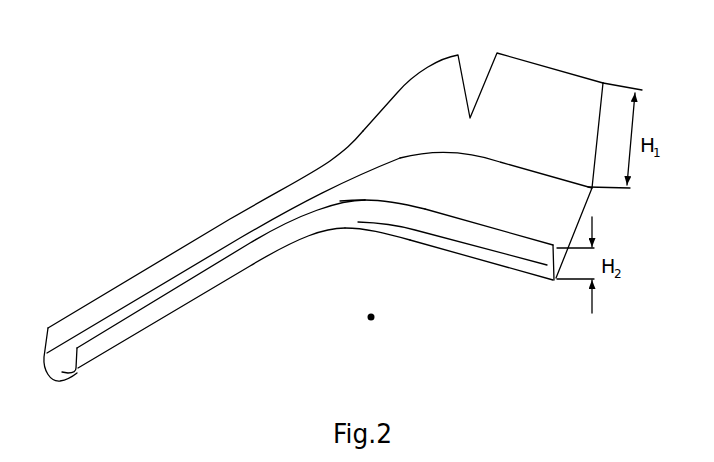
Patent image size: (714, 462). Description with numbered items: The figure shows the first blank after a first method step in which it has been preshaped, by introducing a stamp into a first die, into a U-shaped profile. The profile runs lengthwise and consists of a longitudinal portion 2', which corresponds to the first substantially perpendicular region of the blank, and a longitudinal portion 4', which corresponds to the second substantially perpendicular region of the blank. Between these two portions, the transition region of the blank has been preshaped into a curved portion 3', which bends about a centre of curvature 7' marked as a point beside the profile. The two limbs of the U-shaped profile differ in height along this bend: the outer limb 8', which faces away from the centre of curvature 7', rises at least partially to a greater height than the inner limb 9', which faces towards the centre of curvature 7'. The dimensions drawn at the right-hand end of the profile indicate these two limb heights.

The longitudinal portion 2' is at (222, 259).
The curved portion 3' is at (446, 253).
The longitudinal portion 4' is at (482, 277).
The centre of curvature 7' is at (361, 316).
The outer limb 8' is at (483, 153).
The inner limb 9' is at (351, 241).